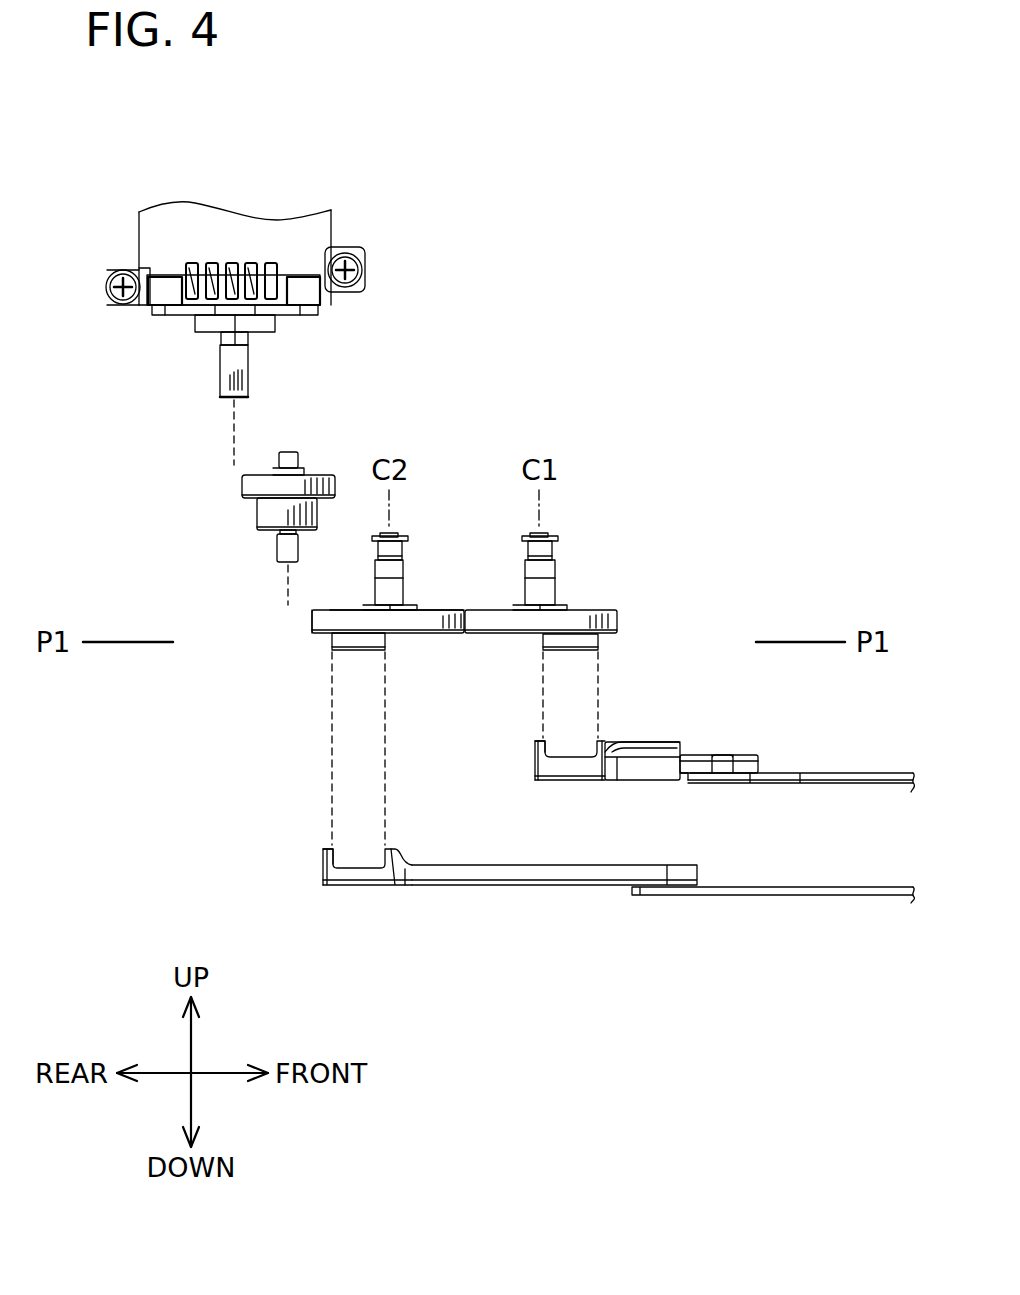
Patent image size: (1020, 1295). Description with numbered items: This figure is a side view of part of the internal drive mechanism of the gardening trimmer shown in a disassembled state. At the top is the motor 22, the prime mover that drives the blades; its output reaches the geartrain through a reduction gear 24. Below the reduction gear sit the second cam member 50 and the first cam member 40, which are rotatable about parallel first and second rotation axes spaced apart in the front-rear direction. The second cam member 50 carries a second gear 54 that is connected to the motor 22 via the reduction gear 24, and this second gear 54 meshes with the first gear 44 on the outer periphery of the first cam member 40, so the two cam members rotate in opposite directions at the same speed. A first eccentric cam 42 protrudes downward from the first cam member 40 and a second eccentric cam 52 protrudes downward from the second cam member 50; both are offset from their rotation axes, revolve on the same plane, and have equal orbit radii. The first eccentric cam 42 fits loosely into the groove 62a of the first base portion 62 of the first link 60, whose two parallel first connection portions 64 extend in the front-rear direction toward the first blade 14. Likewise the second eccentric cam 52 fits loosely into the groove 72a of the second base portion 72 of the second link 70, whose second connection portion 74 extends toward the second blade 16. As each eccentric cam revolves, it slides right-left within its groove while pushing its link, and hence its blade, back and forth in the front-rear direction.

The motor 22 is at (302, 228).
The reduction gear 24 is at (243, 487).
The first cam member 40 is at (464, 601).
The first gear 44 is at (617, 620).
The first eccentric cam 42 is at (598, 642).
The second cam member 50 is at (282, 638).
The second eccentric cam 52 is at (332, 642).
The second gear 54 is at (312, 622).
The first link 60 is at (675, 752).
The first base portion 62 is at (520, 785).
The groove 62a is at (546, 752).
The first connection portion 64 is at (653, 782).
The first blade 14 is at (852, 773).
The second link 70 is at (570, 913).
The second base portion 72 is at (319, 892).
The groove 72a is at (331, 853).
The second connection portion 74 is at (443, 885).
The second blade 16 is at (852, 895).